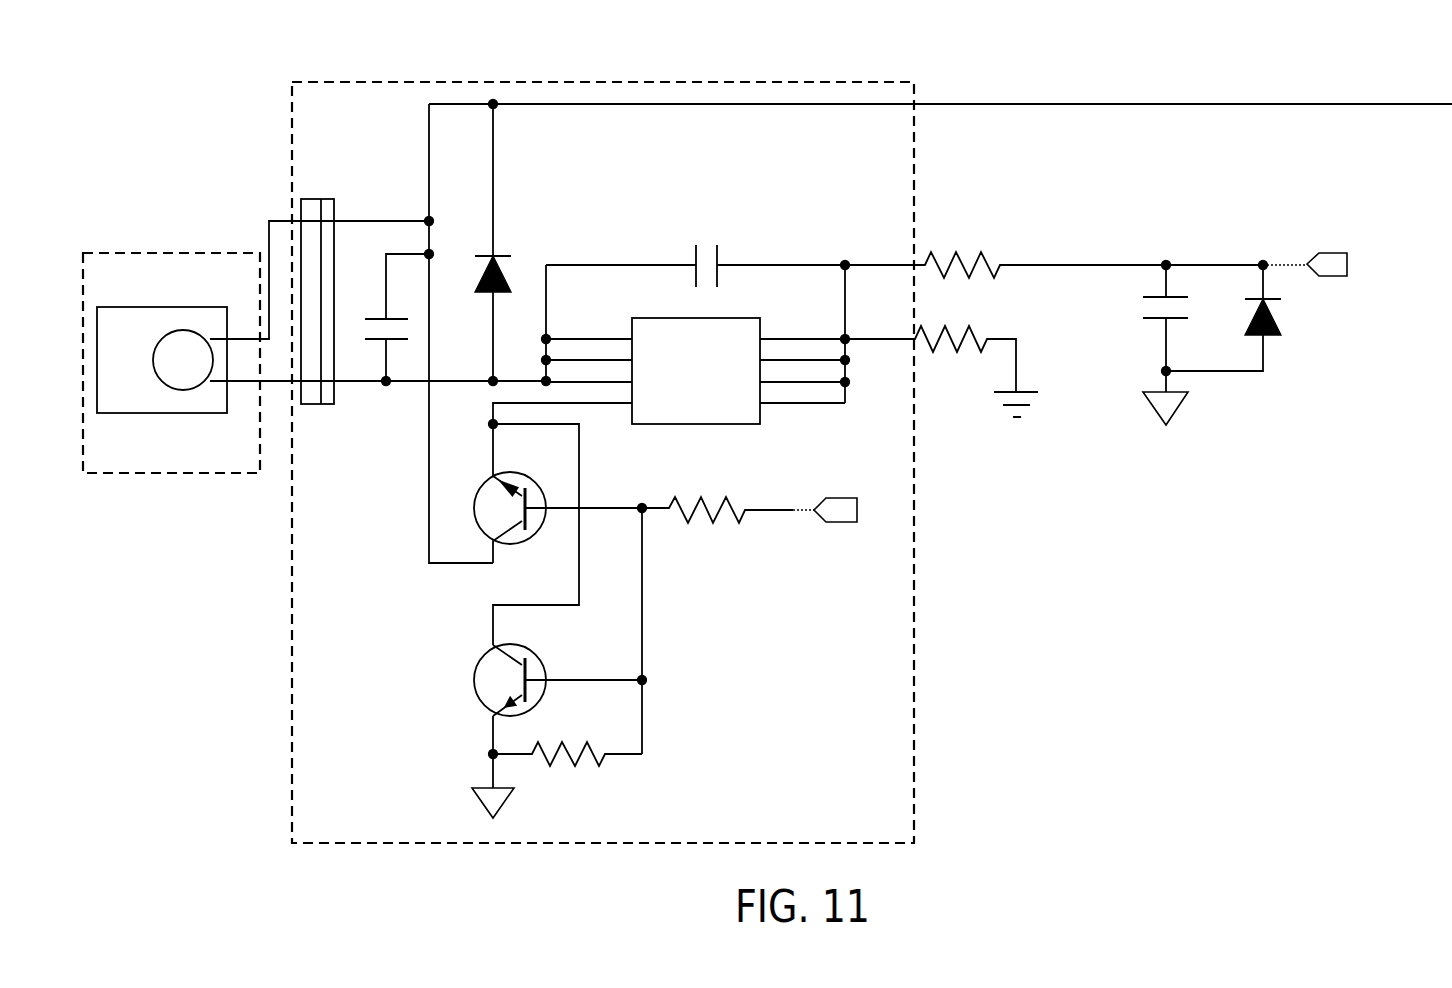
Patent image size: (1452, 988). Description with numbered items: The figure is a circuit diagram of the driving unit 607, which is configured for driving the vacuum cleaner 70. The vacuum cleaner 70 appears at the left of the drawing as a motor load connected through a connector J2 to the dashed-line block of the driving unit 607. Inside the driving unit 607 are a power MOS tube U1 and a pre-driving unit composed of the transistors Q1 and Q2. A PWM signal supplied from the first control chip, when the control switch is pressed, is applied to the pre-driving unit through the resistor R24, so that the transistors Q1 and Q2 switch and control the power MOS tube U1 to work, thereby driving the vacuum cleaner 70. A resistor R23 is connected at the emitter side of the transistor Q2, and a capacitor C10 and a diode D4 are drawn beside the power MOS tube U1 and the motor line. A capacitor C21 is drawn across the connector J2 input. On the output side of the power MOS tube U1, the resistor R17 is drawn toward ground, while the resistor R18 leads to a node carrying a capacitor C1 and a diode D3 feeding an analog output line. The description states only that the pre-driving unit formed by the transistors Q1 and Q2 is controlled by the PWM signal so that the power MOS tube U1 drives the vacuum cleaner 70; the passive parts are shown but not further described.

The vacuum cleaner 70 is at (153, 251).
The driving unit 607 is at (669, 80).
The motor connector J2 is at (172, 348).
The capacitor C21 is at (382, 320).
The diode D4 is at (480, 242).
The power MOS tube U1 is at (671, 343).
The capacitor C10 is at (695, 265).
The transistor Q1 is at (545, 533).
The transistor Q2 is at (548, 663).
The resistor 1K R24 is at (805, 512).
The resistor 1K R23 is at (566, 758).
The resistor 1K R18 is at (1054, 267).
The sense resistor 0.01 R17 is at (941, 371).
The capacitor C1 is at (1142, 343).
The diode D3 is at (1223, 316).